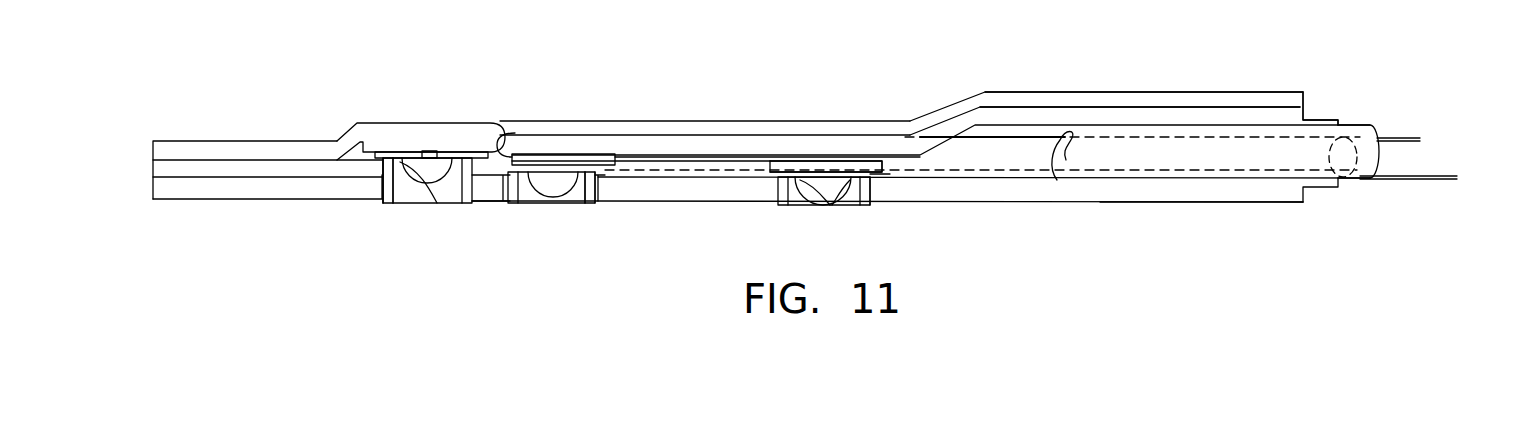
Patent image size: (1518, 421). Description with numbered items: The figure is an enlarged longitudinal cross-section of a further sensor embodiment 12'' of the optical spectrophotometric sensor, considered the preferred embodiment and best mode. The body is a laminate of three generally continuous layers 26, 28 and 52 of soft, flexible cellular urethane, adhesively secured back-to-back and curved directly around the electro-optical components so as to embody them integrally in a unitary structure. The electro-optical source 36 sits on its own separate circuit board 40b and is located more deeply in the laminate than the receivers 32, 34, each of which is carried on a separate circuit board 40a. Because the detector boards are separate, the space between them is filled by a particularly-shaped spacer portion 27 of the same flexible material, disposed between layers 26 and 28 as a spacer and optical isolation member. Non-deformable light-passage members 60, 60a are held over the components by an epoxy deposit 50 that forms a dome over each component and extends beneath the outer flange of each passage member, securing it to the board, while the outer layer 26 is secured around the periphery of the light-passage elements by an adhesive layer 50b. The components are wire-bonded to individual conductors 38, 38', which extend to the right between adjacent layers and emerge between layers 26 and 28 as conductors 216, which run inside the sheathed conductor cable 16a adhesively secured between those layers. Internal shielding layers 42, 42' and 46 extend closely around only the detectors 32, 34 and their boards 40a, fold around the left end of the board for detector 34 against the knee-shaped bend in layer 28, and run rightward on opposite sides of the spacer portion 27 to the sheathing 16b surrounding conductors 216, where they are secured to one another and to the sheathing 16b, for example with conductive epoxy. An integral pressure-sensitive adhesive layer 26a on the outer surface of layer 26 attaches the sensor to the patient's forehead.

The sensor embodiment 12'' is at (567, 117).
The outer layer 26 is at (1303, 196).
The pressure-sensitive adhesive layer 26a is at (1157, 204).
The spacer portion 27 is at (682, 160).
The layer 28 is at (1303, 117).
The layer 52 is at (1298, 98).
The conductor 38 is at (495, 121).
The conductor 38' is at (703, 120).
The circuit board 40b is at (432, 151).
The circuit board 40a is at (569, 159).
The shielding layer 42' is at (941, 120).
The conductive sheet shielding 46 is at (767, 120).
The shielding layer 42 is at (934, 203).
The receiver 32 is at (821, 168).
The electro-optical source 36 is at (430, 177).
The light-passage member 60a is at (387, 190).
The receiver 34 is at (550, 178).
The light-passage member 60 is at (586, 204).
The epoxy deposit 50 is at (433, 165).
The adhesive layer 50b is at (378, 187).
The sheath 16b is at (1362, 132).
The sheathed conductor cable 16a is at (1327, 187).
The electrical conductors 216 is at (1042, 170).